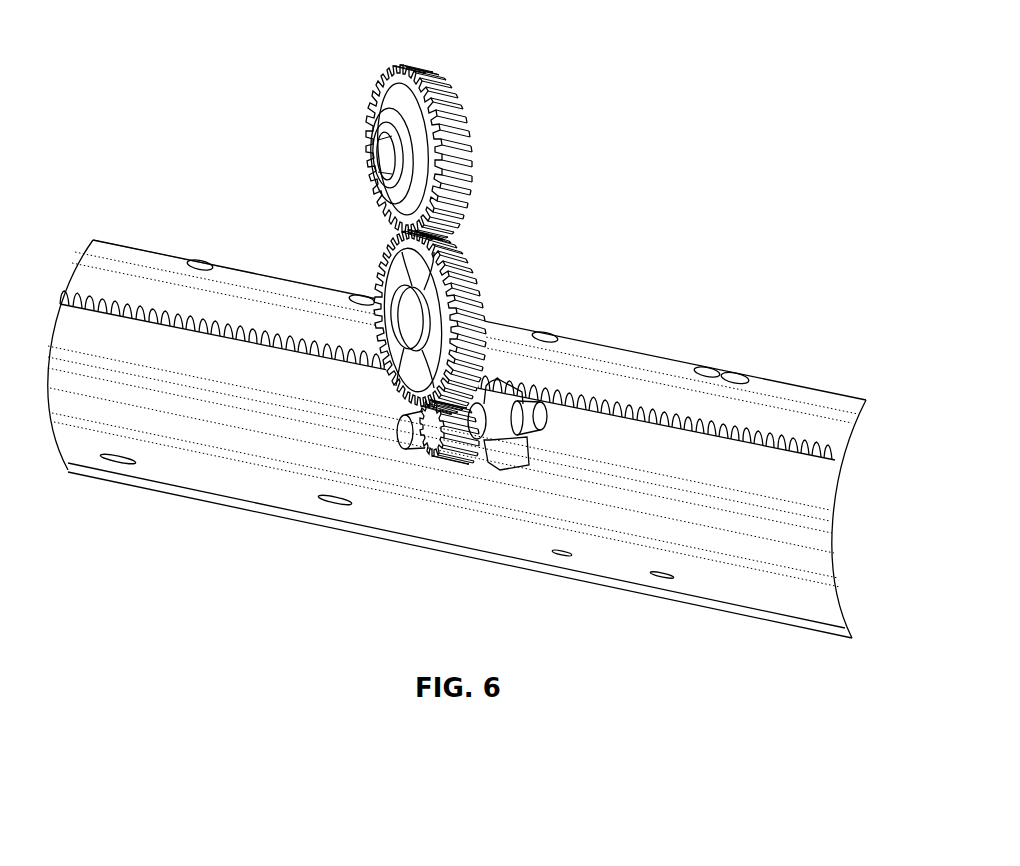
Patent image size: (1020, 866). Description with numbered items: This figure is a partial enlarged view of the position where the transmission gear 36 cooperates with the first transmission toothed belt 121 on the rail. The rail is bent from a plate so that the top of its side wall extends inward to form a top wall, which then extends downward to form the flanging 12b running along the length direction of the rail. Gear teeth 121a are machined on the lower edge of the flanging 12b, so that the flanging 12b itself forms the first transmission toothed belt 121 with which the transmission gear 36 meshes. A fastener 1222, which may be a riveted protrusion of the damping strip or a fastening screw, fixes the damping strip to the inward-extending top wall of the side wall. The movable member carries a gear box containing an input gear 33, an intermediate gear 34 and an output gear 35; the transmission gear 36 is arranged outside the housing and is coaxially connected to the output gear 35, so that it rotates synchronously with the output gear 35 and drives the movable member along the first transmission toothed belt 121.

The input gear 33 is at (433, 68).
The intermediate gear 34 is at (470, 262).
The output gear 35 is at (433, 453).
The transmission gear 36 is at (500, 402).
The first transmission toothed belt 121 is at (797, 418).
The gear teeth 121a is at (237, 322).
The fastener 1222 is at (738, 372).
The flanging 12b is at (97, 270).